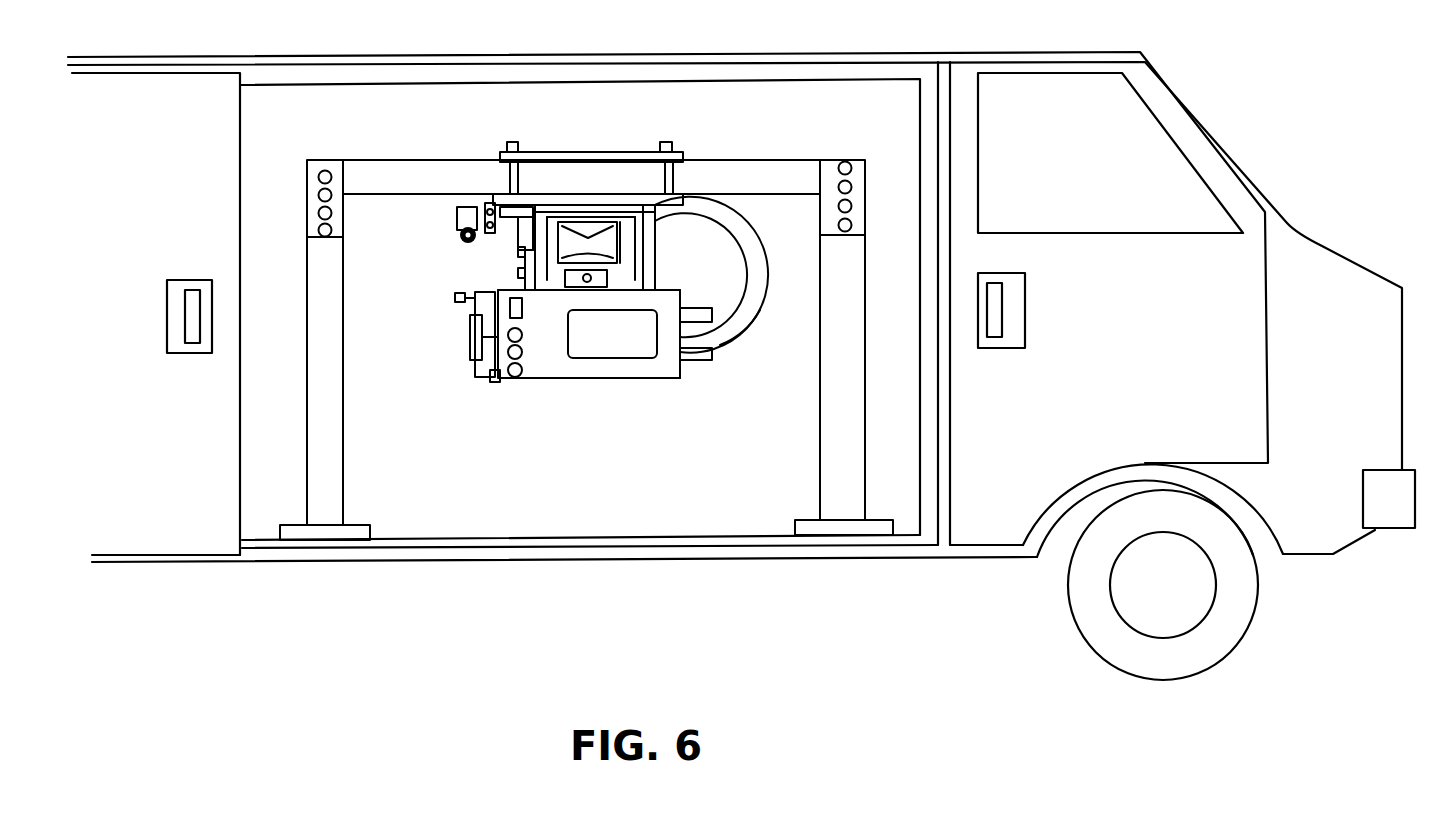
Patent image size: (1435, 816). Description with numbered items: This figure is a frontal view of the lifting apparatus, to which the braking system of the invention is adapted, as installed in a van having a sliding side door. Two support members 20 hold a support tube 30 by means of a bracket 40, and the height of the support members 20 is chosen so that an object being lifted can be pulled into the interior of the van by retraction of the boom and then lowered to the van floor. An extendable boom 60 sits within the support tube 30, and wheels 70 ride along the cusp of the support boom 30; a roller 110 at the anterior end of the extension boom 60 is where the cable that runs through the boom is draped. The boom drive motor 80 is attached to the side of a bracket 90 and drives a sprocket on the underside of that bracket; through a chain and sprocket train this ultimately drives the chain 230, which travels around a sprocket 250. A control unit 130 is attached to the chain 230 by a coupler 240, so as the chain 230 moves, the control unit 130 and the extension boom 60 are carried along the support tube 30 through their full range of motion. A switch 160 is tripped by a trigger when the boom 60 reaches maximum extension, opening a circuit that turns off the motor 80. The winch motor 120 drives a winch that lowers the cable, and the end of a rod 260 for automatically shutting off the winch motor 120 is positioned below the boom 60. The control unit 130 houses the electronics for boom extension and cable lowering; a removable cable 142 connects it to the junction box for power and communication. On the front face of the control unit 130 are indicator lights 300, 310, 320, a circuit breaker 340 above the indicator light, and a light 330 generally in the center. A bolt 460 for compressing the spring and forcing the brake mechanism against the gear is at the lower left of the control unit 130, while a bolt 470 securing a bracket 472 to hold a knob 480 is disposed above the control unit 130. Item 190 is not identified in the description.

The support members 20 is at (865, 237).
The support tube 30 is at (642, 215).
The bracket 40 is at (670, 180).
The extendable boom 60 is at (620, 220).
The wheels 70 is at (637, 258).
The motor 80 is at (467, 207).
The bracket 90 is at (493, 207).
The roller 110 is at (573, 237).
The motor 120 is at (707, 355).
The control unit 130 is at (640, 378).
The cable 142 is at (748, 330).
The switch 160 is at (650, 228).
The camera unit 190 is at (617, 282).
The chain 230 is at (522, 262).
The coupler 240 is at (525, 280).
The sprocket 250 is at (543, 213).
The rod 260 is at (615, 296).
The indicator light 300 is at (527, 337).
The indicator light 310 is at (525, 352).
The indicator light 320 is at (522, 372).
The light 330 is at (627, 370).
The circuit breaker 340 is at (510, 298).
The bolt 460 is at (490, 378).
The bolt 470 is at (457, 297).
The bracket 472 is at (475, 315).
The knob 480 is at (473, 342).